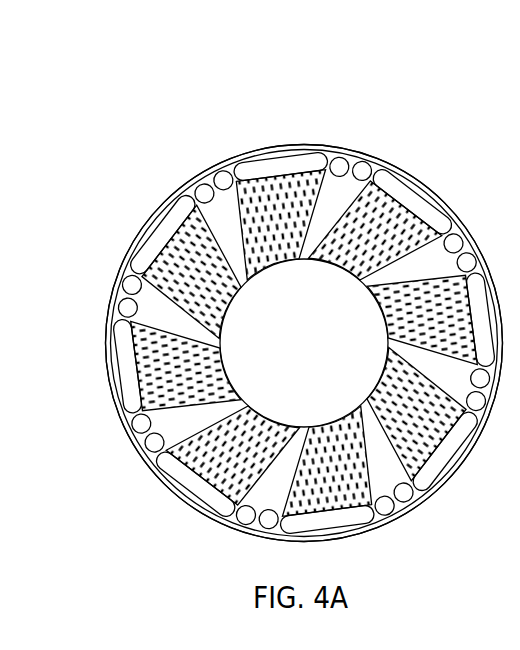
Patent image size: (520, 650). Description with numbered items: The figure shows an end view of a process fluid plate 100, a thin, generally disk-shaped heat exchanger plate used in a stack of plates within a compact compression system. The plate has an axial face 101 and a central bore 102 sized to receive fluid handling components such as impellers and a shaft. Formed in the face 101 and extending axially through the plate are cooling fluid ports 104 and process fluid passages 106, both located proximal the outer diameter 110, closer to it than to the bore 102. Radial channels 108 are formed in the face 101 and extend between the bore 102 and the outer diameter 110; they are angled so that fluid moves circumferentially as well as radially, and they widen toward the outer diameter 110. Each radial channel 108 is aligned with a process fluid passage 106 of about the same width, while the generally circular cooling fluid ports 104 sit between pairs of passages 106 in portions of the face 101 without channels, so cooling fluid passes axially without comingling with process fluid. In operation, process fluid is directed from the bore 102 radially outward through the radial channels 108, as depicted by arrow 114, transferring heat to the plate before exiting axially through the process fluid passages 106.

The process fluid plate 100 is at (146, 86).
The axial face 101 is at (350, 187).
The bore 102 is at (230, 381).
The cooling fluid ports 104 is at (136, 432).
The process fluid passages 106 is at (176, 215).
The radial channels 108 is at (272, 180).
The outer diameter 110 is at (212, 521).
The arrow 114 is at (229, 303).